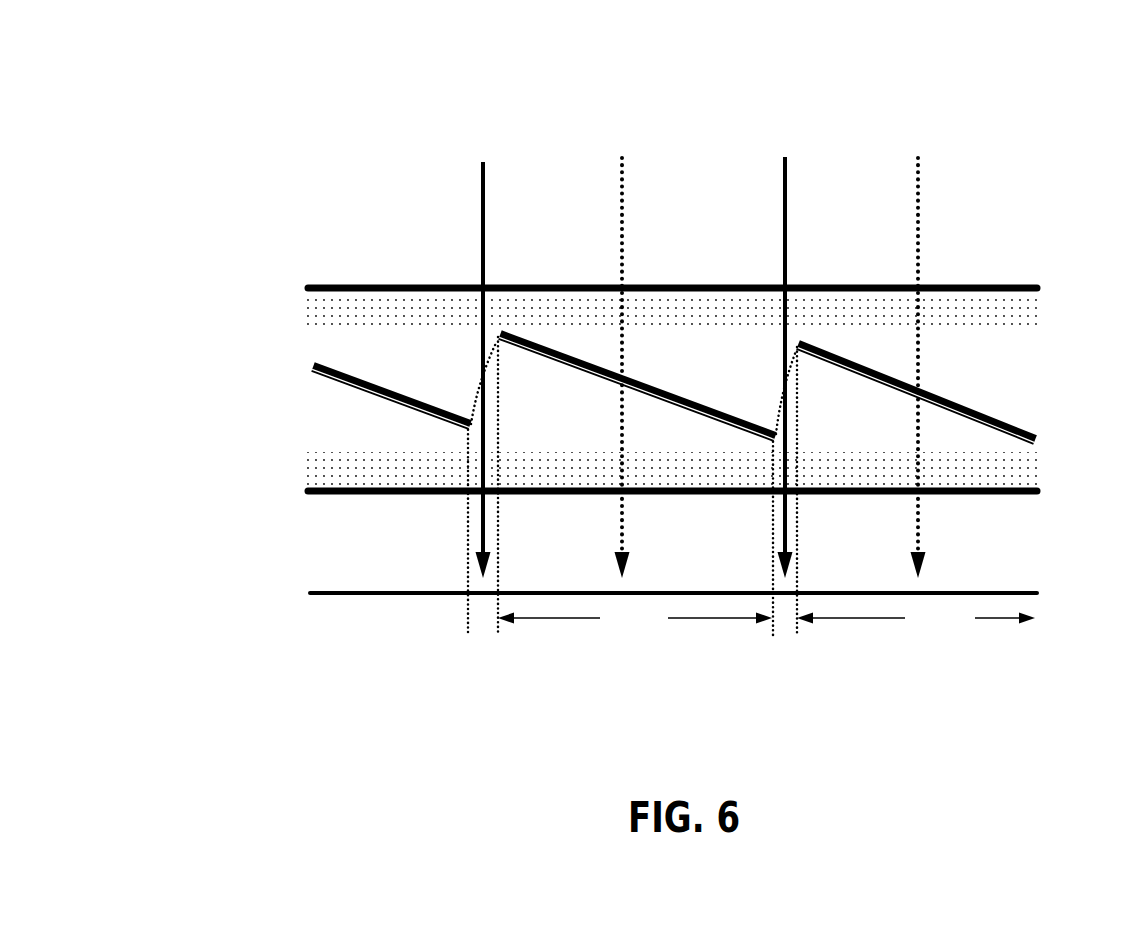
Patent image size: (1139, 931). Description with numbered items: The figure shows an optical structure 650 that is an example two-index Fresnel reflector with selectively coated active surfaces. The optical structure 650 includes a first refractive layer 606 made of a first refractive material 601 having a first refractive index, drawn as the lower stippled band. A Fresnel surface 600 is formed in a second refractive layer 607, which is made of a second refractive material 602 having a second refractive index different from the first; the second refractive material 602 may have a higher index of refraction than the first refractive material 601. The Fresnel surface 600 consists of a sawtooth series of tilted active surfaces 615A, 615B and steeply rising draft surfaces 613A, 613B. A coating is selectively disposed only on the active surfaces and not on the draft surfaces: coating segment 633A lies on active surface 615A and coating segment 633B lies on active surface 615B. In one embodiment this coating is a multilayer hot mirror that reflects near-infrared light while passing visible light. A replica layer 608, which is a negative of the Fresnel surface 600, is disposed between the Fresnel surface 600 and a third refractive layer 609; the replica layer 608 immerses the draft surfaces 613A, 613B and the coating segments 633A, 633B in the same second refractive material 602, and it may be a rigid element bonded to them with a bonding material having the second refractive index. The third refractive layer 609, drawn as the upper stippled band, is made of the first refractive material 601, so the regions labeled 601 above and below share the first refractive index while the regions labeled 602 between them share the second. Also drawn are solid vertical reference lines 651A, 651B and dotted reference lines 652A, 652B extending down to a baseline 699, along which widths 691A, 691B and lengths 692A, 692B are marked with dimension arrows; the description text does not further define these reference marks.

The optical structure 650 is at (1002, 48).
The Fresnel surface 600 is at (653, 390).
The first refractive material 601 is at (671, 390).
The second refractive material 602 is at (631, 390).
The first refractive layer 606 is at (290, 498).
The second refractive layer 607 is at (297, 411).
The replica layer 608 is at (286, 360).
The third refractive layer 609 is at (297, 286).
The draft surface 613A is at (461, 396).
The draft surface 613B is at (765, 412).
The active surface 615A is at (700, 439).
The active surface 615B is at (964, 439).
The coating segment 633A is at (647, 367).
The coating segment 633B is at (944, 377).
The first reference axis 651A is at (482, 188).
The second reference axis 651B is at (785, 198).
The first period boundary 652A is at (621, 185).
The second period boundary 652B is at (918, 187).
The first transition width 691A is at (481, 620).
The second transition width 691B is at (785, 620).
The first period length 692A is at (635, 618).
The second period length 692B is at (916, 618).
The reference baseline 699 is at (670, 594).